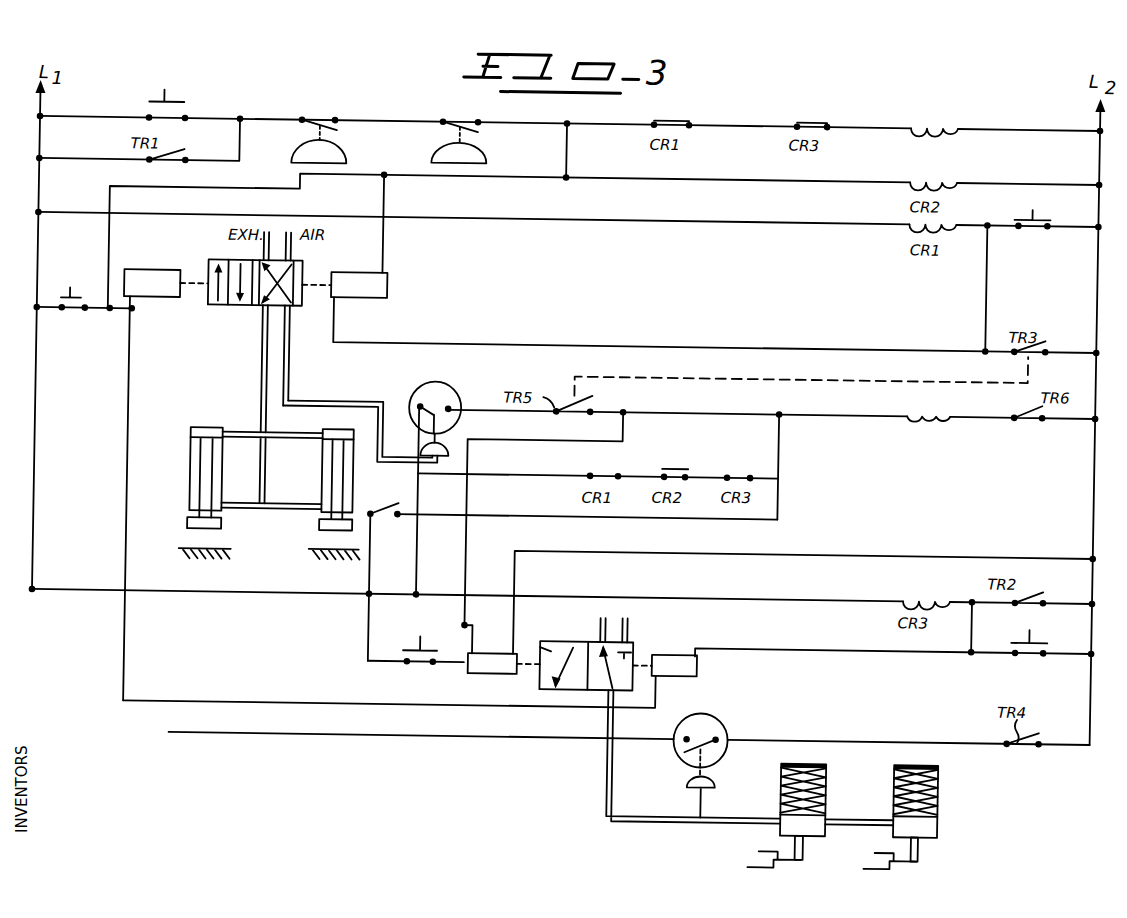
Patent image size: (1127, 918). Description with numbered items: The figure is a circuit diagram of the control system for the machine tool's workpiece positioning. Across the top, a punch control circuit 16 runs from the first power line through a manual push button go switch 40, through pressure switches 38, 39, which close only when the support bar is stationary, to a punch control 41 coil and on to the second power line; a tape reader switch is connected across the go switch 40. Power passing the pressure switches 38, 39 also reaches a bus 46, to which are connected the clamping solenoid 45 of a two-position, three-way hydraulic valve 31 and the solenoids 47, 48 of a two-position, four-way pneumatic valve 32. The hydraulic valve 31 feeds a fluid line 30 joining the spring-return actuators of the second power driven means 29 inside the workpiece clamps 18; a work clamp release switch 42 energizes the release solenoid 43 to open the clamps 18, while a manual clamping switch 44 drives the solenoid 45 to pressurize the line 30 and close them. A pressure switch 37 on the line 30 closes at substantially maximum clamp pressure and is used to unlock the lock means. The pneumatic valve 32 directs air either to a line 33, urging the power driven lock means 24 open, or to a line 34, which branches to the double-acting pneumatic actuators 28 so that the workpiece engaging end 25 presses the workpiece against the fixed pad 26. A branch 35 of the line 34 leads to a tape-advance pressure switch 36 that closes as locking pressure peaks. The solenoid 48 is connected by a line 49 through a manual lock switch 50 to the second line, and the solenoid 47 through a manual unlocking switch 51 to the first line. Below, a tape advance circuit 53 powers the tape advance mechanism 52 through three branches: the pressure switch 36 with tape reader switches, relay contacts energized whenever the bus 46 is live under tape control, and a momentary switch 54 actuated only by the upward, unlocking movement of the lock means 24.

The punch control circuit 16 is at (755, 124).
The workpiece clamps 18 is at (757, 845).
The power driven lock means 24 is at (262, 423).
The workpiece engaging end 25 is at (326, 521).
The fixed pad 26 is at (316, 550).
The pneumatic actuators 28 is at (196, 477).
The second power driven means 29 is at (904, 774).
The fluid line 30 is at (666, 813).
The hydraulic valve 31 is at (593, 646).
The pneumatic valve 32 is at (216, 257).
The line 33 is at (266, 349).
The line 34 is at (297, 349).
The branch 35 is at (385, 399).
The tape-advance pressure switch 36 is at (442, 376).
The pressure switch 37 is at (729, 711).
The pressure switch 38 is at (345, 153).
The pressure switch 39 is at (488, 155).
The go switch 40 is at (186, 112).
The punch control 41 is at (948, 118).
The work clamp release switch 42 is at (408, 644).
The release solenoid 43 is at (502, 646).
The manual clamping switch 44 is at (1040, 626).
The solenoid 45 is at (672, 645).
The bus 46 is at (133, 382).
The solenoid 47 is at (160, 256).
The solenoid 48 is at (350, 268).
The line 49 is at (710, 338).
The manual lock switch 50 is at (1040, 204).
The manual unlocking switch 51 is at (68, 289).
The tape advance mechanism 52 is at (941, 411).
The tape advance circuit 53 is at (790, 429).
The momentary switch 54 is at (390, 499).